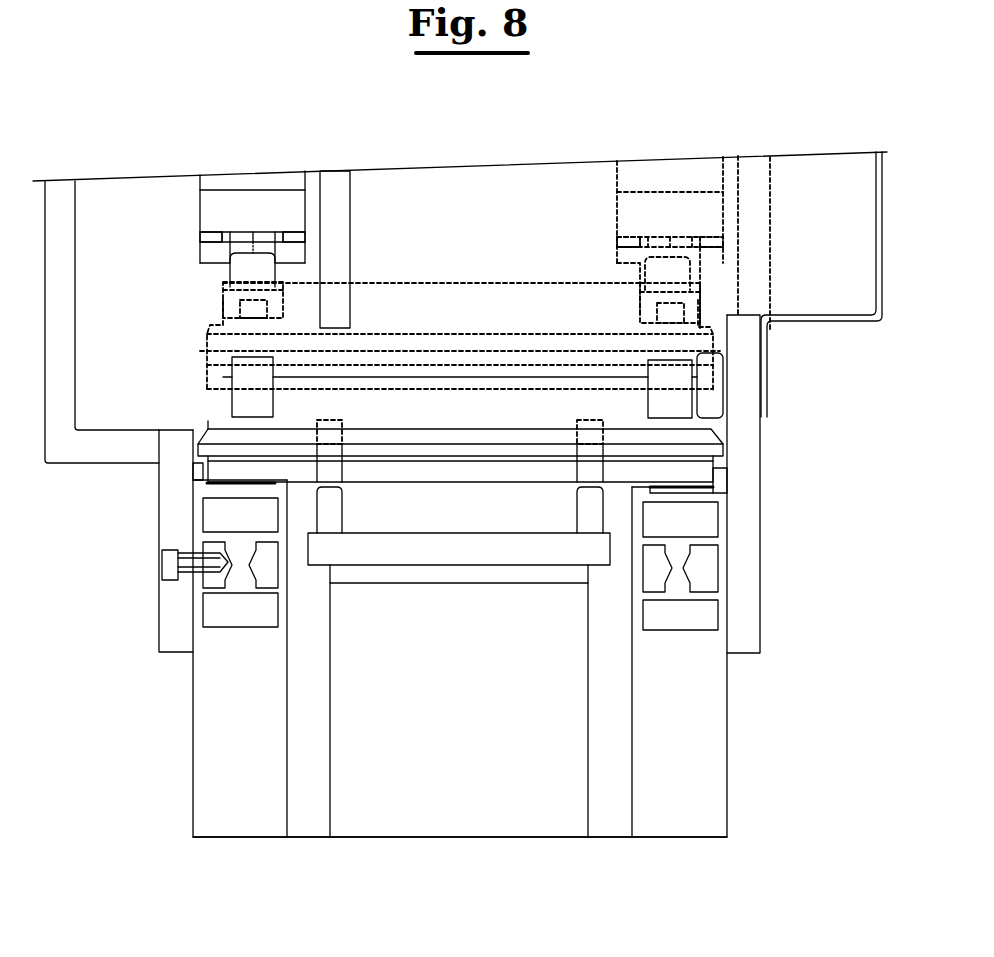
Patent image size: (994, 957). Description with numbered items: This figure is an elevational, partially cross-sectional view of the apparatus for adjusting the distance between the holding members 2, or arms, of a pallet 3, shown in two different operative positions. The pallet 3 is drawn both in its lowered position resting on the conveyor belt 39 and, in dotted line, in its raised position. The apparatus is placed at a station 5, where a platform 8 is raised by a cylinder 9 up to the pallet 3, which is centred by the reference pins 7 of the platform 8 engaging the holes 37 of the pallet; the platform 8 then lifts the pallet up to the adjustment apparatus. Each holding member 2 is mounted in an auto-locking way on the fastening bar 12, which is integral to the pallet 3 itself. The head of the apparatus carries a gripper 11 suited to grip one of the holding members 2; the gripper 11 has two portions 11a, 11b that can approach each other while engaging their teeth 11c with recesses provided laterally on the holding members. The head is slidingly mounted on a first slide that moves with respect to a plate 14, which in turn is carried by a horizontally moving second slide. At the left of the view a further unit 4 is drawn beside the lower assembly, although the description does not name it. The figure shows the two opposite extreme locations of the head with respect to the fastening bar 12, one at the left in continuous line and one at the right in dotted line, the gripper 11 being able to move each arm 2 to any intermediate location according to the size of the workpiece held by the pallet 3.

The holding member 2 is at (228, 282).
The pallet 3 is at (210, 383).
The clamp unit 4 is at (162, 664).
The station 5 is at (472, 848).
The reference pin 7 is at (324, 510).
The platform 8 is at (458, 547).
The cylinder 9 is at (522, 672).
The gripper 11 is at (251, 193).
The gripper portion 11a is at (205, 232).
The gripper portion 11b is at (278, 278).
The tooth 11c is at (226, 306).
The fastening bar 12 is at (474, 376).
The plate 14 is at (351, 228).
The hole 37 is at (345, 440).
The conveyor belt 39 is at (222, 484).